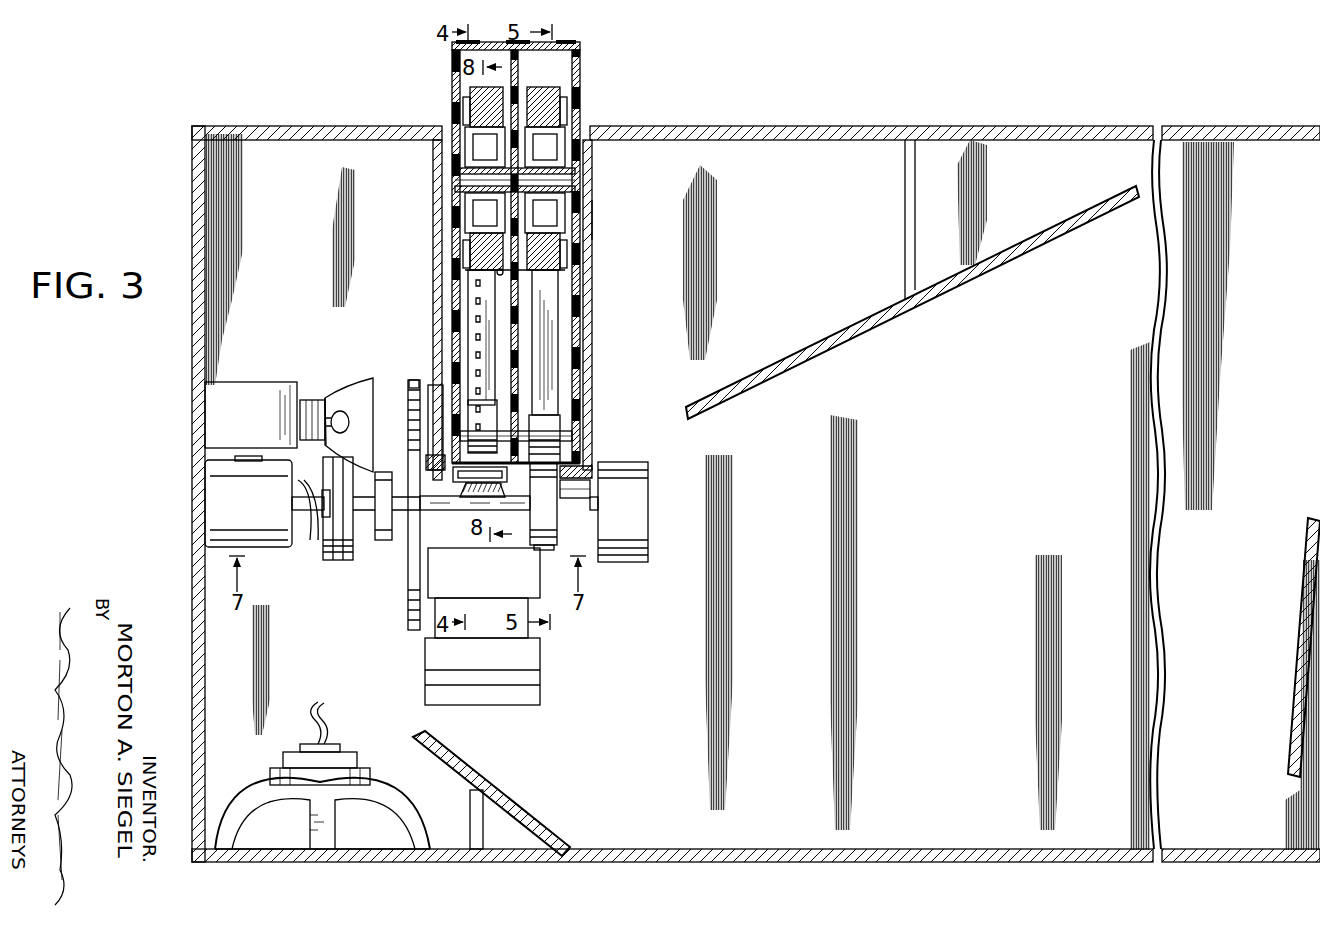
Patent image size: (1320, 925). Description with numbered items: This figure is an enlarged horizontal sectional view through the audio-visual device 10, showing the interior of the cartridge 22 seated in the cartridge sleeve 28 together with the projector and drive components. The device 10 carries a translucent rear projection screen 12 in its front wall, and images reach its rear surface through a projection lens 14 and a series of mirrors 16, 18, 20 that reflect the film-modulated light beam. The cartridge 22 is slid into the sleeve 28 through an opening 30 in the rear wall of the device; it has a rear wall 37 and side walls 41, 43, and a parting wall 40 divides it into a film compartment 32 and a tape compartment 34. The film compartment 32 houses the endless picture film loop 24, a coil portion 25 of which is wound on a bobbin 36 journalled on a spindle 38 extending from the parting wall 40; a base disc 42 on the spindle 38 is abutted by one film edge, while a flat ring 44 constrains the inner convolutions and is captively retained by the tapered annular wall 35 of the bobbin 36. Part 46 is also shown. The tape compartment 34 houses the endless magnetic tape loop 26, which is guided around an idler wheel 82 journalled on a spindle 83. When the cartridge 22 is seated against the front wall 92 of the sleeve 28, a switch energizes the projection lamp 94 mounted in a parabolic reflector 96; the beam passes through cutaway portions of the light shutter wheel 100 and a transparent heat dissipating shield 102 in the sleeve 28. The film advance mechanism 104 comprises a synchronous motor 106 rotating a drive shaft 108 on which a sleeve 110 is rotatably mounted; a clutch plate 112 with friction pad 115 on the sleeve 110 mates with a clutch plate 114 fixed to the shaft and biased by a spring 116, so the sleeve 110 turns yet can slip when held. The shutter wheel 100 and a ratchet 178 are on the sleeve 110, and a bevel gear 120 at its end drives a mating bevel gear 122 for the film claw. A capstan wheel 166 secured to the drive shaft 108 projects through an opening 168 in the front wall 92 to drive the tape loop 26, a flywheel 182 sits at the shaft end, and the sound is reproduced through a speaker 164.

The audio-visual device 10 is at (148, 387).
The translucent rear projection screen 12 is at (905, 862).
The projection lens 14 is at (530, 675).
The mirror 16 is at (522, 802).
The mirror 18 is at (1300, 650).
The mirror 20 is at (958, 296).
The cartridge 22 is at (438, 65).
The endless picture film loop 24 is at (476, 350).
The coil portion 25 is at (470, 272).
The endless magnetic tape loop 26 is at (572, 464).
The cartridge sleeve 28 is at (593, 220).
The opening 30 is at (588, 132).
The film compartment 32 is at (466, 80).
The tape compartment 34 is at (565, 85).
The annular wall 35 is at (470, 258).
The bobbin 36 is at (478, 213).
The rear wall 37 is at (579, 50).
The spindle 38 is at (455, 180).
The parting wall 40 is at (482, 322).
The side wall 41 is at (453, 314).
The base disc 42 is at (466, 292).
The side wall 43 is at (580, 264).
The flat ring 44 is at (470, 110).
The left lower hatched block 46 is at (470, 234).
The idler wheel 82 is at (556, 418).
The spindle 83 is at (572, 436).
The front wall 92 is at (563, 484).
The projection lamp 94 is at (345, 412).
The parabolic reflector 96 is at (345, 385).
The light shutter wheel 100 is at (410, 386).
The transparent heat dissipating shield 102 is at (435, 418).
The film advance mechanism 104 is at (402, 630).
The synchronous motor 106 is at (262, 552).
The drive shaft 108 is at (328, 486).
The sleeve 110 is at (386, 522).
The clutch plate 112 is at (352, 562).
The mating clutch plate 114 is at (333, 562).
The friction pad 115 is at (346, 562).
The spring 116 is at (298, 542).
The bevel gear 120 is at (460, 514).
The mating bevel gear 122 is at (494, 493).
The speaker 164 is at (262, 790).
The capstan wheel 166 is at (548, 550).
The opening 168 is at (565, 498).
The ratchet 178 is at (378, 545).
The flywheel 182 is at (625, 545).